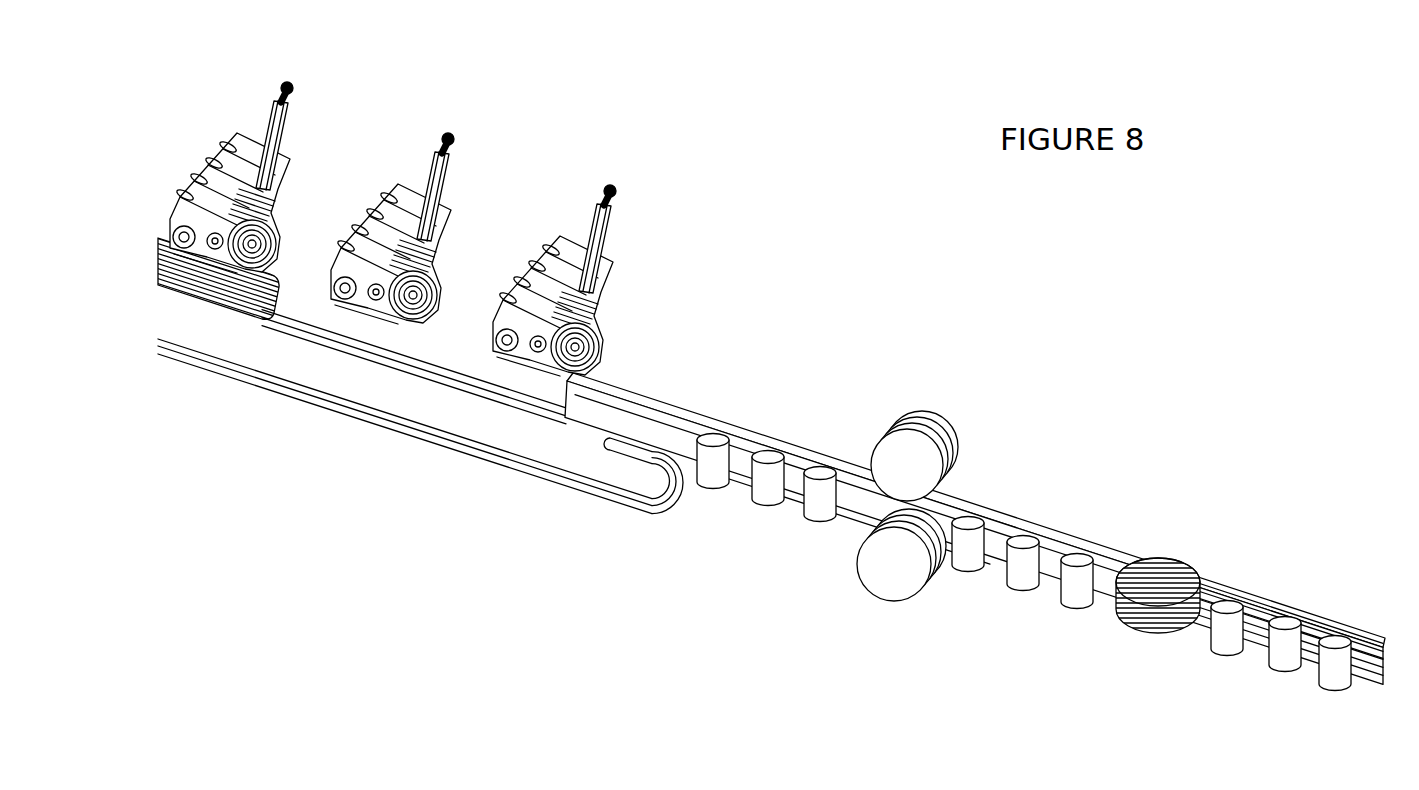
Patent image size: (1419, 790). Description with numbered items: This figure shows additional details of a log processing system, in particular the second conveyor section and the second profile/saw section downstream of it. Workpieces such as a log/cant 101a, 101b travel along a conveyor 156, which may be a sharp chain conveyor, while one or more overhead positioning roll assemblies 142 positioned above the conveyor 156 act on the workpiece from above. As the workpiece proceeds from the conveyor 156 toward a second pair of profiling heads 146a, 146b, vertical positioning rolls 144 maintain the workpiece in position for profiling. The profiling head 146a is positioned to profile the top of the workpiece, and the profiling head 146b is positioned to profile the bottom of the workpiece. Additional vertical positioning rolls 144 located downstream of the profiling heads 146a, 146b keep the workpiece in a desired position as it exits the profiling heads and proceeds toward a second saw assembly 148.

The log/cant 101a is at (263, 270).
The log/cant 101b is at (620, 395).
The overhead positioning roll assembly 142 is at (622, 296).
The vertical positioning rolls 144 is at (800, 512).
The profiling head 146a is at (937, 410).
The profiling head 146b is at (870, 567).
The second saw assembly 148 is at (1133, 627).
The conveyor 156 is at (365, 413).